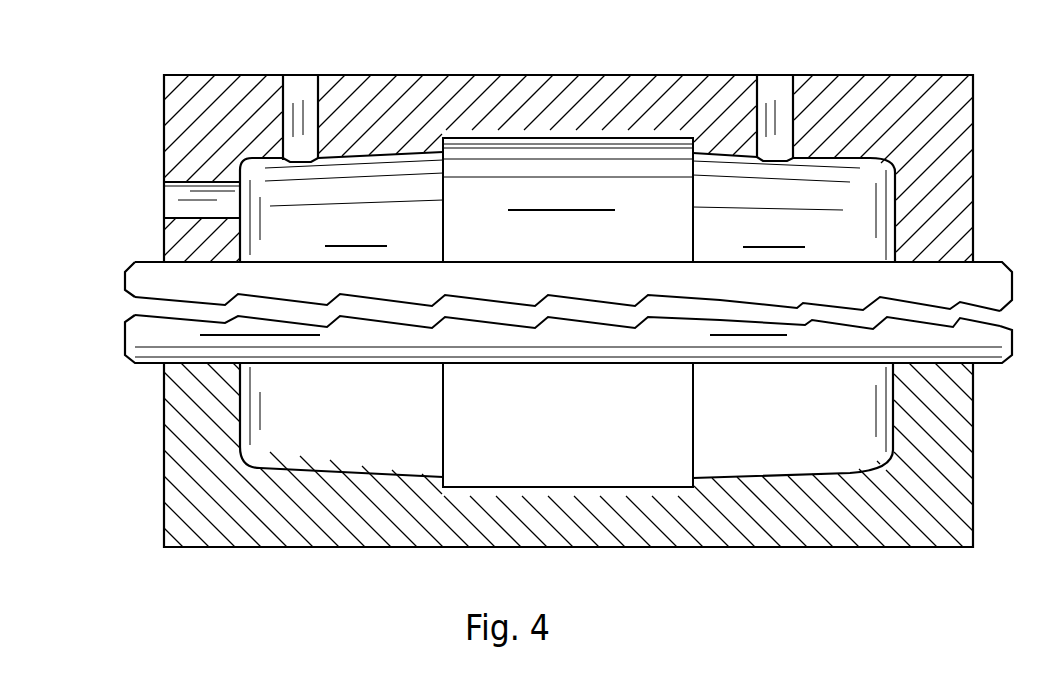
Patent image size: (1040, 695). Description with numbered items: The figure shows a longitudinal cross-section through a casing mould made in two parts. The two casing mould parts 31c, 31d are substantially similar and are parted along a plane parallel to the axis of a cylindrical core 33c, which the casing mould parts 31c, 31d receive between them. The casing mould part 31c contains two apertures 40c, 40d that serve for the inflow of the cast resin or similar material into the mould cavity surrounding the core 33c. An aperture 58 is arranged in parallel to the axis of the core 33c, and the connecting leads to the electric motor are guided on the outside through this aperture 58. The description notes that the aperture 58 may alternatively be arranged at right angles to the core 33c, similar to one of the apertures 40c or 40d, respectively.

The casing mould part 31c is at (190, 113).
The casing mould part 31d is at (205, 462).
The aperture 40c is at (292, 92).
The aperture 40d is at (762, 92).
The aperture 58 is at (178, 193).
The cylindrical core 33c is at (155, 283).